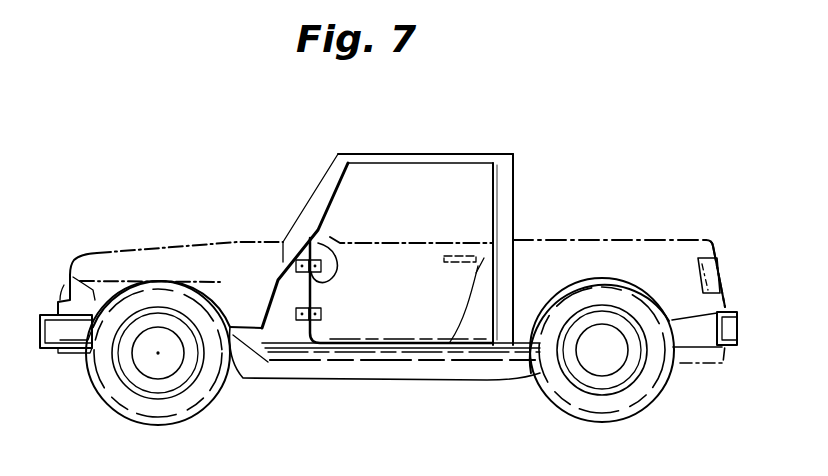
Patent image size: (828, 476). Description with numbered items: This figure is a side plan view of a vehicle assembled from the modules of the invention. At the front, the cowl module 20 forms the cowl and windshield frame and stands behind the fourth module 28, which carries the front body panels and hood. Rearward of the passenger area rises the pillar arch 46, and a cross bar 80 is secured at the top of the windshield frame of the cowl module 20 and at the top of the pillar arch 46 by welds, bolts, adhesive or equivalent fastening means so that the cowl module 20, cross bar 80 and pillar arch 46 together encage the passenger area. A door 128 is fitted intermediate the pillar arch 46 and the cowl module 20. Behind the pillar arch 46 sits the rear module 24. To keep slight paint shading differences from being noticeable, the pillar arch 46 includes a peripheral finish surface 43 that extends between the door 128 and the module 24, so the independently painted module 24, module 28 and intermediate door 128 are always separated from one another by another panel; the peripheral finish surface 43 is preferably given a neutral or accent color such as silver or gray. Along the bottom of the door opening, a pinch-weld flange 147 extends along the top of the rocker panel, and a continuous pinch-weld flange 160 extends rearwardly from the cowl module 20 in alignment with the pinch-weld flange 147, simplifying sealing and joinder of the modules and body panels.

The cowl module 20 is at (285, 248).
The module 24 is at (716, 244).
The fourth module 28 is at (108, 249).
The peripheral finish surface 43 is at (504, 308).
The pillar arch 46 is at (505, 175).
The cross bar 80 is at (393, 136).
The door 128 is at (402, 243).
The pinch-weld flange 147 is at (500, 238).
The pinch-weld flange 160 is at (318, 242).